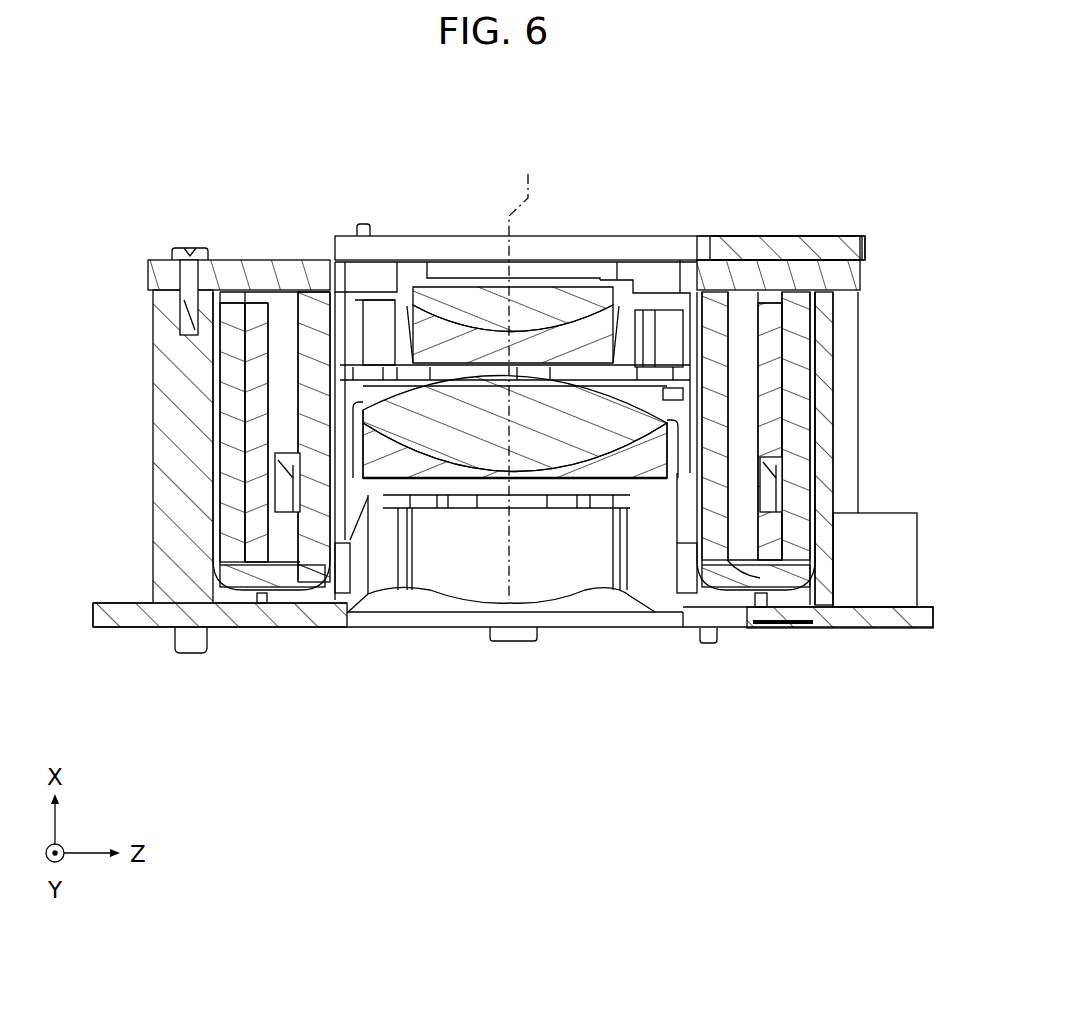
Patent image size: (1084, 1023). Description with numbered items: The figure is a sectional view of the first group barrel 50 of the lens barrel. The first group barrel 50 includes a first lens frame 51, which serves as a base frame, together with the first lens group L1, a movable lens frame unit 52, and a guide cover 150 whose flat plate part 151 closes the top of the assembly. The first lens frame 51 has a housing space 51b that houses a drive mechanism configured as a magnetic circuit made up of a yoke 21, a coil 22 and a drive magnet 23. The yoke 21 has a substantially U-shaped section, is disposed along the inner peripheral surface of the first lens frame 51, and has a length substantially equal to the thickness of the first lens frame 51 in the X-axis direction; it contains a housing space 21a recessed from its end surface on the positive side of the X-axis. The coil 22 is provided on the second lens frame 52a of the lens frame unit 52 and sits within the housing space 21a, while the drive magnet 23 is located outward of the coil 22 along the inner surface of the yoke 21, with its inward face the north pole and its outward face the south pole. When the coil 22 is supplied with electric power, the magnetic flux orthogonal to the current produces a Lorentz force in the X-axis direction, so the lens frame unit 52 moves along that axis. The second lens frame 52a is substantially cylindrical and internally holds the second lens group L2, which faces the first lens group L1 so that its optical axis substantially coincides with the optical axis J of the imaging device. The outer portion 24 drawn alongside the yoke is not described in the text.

The first group barrel 50 is at (912, 192).
The guide cover 150 is at (795, 228).
The flat plate part 151 is at (822, 246).
The outer yoke 24 is at (822, 308).
The yoke 21 is at (793, 338).
The housing space 21a is at (733, 562).
The drive magnet 23 is at (770, 380).
The coil 22 is at (743, 478).
The lens frame unit 52 is at (672, 141).
The second lens frame 52a is at (649, 302).
The first lens group L1 is at (467, 370).
The second lens group L2 is at (585, 270).
The optical axis J is at (520, 372).
The first lens frame 51 is at (665, 592).
The housing space 51b is at (792, 626).